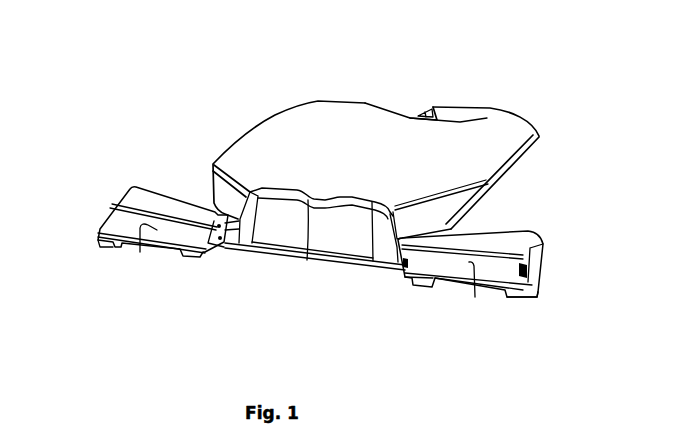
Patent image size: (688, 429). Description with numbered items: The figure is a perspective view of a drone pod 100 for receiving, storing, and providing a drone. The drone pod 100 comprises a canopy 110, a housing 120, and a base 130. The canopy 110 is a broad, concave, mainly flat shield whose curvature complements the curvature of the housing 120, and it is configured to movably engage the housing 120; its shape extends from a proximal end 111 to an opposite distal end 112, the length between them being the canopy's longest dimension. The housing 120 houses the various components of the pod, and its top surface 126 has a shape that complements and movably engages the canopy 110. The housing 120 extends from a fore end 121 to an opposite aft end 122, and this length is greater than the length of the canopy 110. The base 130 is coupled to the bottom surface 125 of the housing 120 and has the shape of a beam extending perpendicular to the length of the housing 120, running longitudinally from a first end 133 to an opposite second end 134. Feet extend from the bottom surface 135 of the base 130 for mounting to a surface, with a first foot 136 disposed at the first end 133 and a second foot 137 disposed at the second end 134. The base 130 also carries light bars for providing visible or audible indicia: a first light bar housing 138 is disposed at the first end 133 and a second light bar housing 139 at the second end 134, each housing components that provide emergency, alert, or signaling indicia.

The drone pod 100 is at (285, 71).
The canopy 110 is at (287, 125).
The proximal end 111 is at (322, 203).
The distal end 112 is at (510, 118).
The housing 120 is at (535, 152).
The fore end 121 is at (276, 217).
The aft end 122 is at (427, 99).
The bottom surface 125 is at (519, 200).
The top surface 126 is at (453, 113).
The base 130 is at (543, 303).
The first end 133 is at (93, 213).
The second end 134 is at (569, 274).
The bottom surface 135 is at (387, 269).
The first foot 136 is at (97, 242).
The second foot 137 is at (544, 275).
The first light bar housing 138 is at (140, 251).
The second light bar housing 139 is at (476, 292).